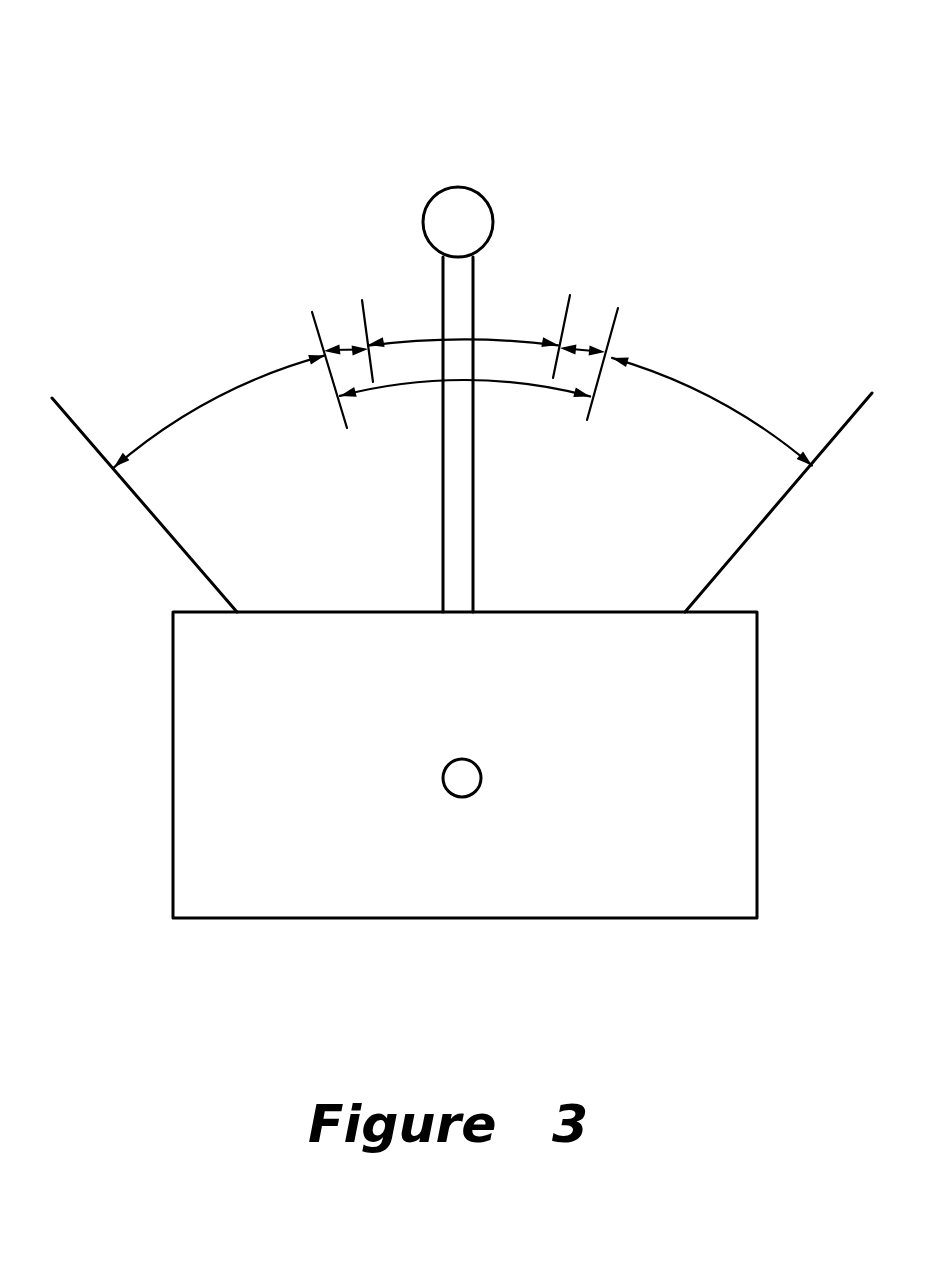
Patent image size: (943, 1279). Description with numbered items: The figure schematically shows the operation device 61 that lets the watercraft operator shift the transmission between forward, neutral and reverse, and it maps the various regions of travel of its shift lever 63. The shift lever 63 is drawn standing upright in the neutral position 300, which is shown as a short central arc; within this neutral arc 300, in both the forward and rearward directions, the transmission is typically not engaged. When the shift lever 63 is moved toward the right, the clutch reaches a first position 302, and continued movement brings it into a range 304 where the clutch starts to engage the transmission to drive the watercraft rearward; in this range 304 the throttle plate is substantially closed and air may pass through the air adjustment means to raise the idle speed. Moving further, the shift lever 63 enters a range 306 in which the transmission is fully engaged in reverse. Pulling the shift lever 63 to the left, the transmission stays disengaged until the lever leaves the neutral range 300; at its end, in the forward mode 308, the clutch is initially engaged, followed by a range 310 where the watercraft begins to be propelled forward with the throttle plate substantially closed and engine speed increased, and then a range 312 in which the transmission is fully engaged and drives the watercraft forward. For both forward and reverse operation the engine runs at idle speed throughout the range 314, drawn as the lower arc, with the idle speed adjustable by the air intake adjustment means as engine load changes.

The operation device 61 is at (160, 70).
The shift lever 63 is at (455, 186).
The neutral position 300 is at (513, 341).
The first position 302 is at (565, 318).
The range 304 is at (583, 343).
The range 306 is at (727, 410).
The forward mode 308 is at (367, 330).
The range 310 is at (345, 345).
The range 312 is at (212, 400).
The range 314 is at (398, 389).